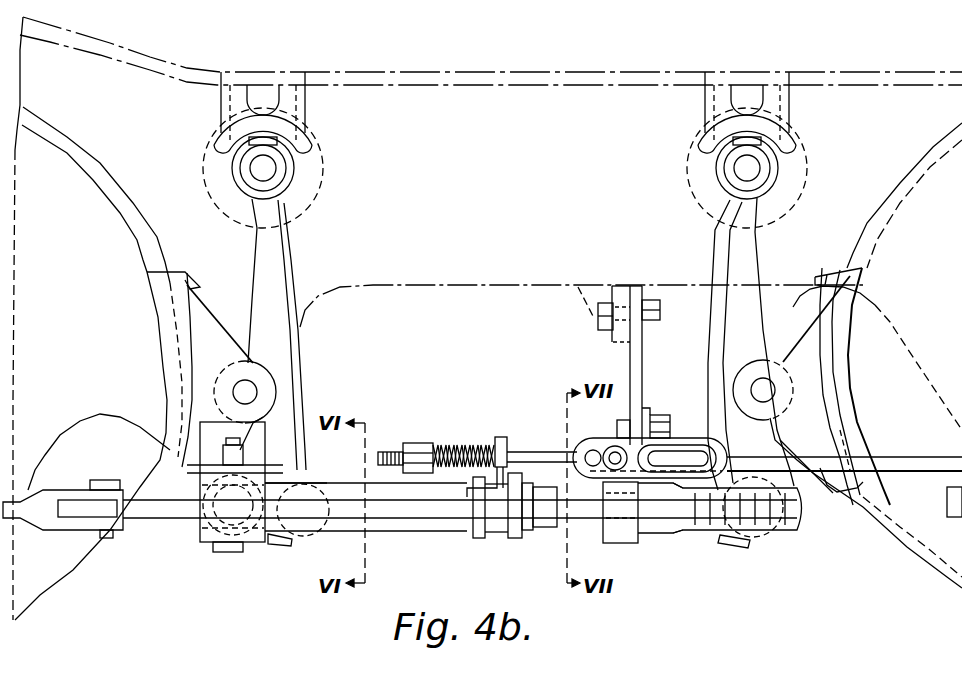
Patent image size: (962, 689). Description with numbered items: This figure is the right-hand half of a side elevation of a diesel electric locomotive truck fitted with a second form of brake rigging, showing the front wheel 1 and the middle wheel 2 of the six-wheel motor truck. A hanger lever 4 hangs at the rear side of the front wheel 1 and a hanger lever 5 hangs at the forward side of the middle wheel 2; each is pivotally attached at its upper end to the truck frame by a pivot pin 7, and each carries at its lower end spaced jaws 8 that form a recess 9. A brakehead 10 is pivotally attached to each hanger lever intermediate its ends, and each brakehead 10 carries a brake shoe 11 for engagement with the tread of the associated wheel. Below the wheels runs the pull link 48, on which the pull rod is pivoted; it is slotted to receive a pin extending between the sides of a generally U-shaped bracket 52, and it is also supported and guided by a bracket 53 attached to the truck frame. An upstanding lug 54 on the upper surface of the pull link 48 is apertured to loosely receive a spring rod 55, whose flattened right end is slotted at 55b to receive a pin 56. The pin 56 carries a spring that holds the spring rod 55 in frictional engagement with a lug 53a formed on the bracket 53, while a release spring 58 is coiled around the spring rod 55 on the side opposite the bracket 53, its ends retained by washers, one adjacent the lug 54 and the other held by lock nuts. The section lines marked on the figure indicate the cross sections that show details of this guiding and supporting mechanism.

The front wheel 1 is at (871, 383).
The middle wheel 2 is at (103, 376).
The hanger lever 4 is at (722, 250).
The hanger lever 5 is at (290, 247).
The pivot pin 7 is at (265, 168).
The spaced jaws 8 is at (533, 501).
The recess 9 is at (507, 561).
The brakehead 10 is at (518, 367).
The brake shoe 11 is at (504, 253).
The pull link 48 is at (482, 513).
The U-shaped bracket 52 is at (235, 505).
The bracket 53 is at (630, 366).
The lug 53a is at (650, 442).
The upstanding lug 54 is at (470, 451).
The spring rod 55 is at (542, 433).
The slot 55b is at (666, 427).
The pin 56 is at (610, 530).
The release spring 58 is at (416, 439).